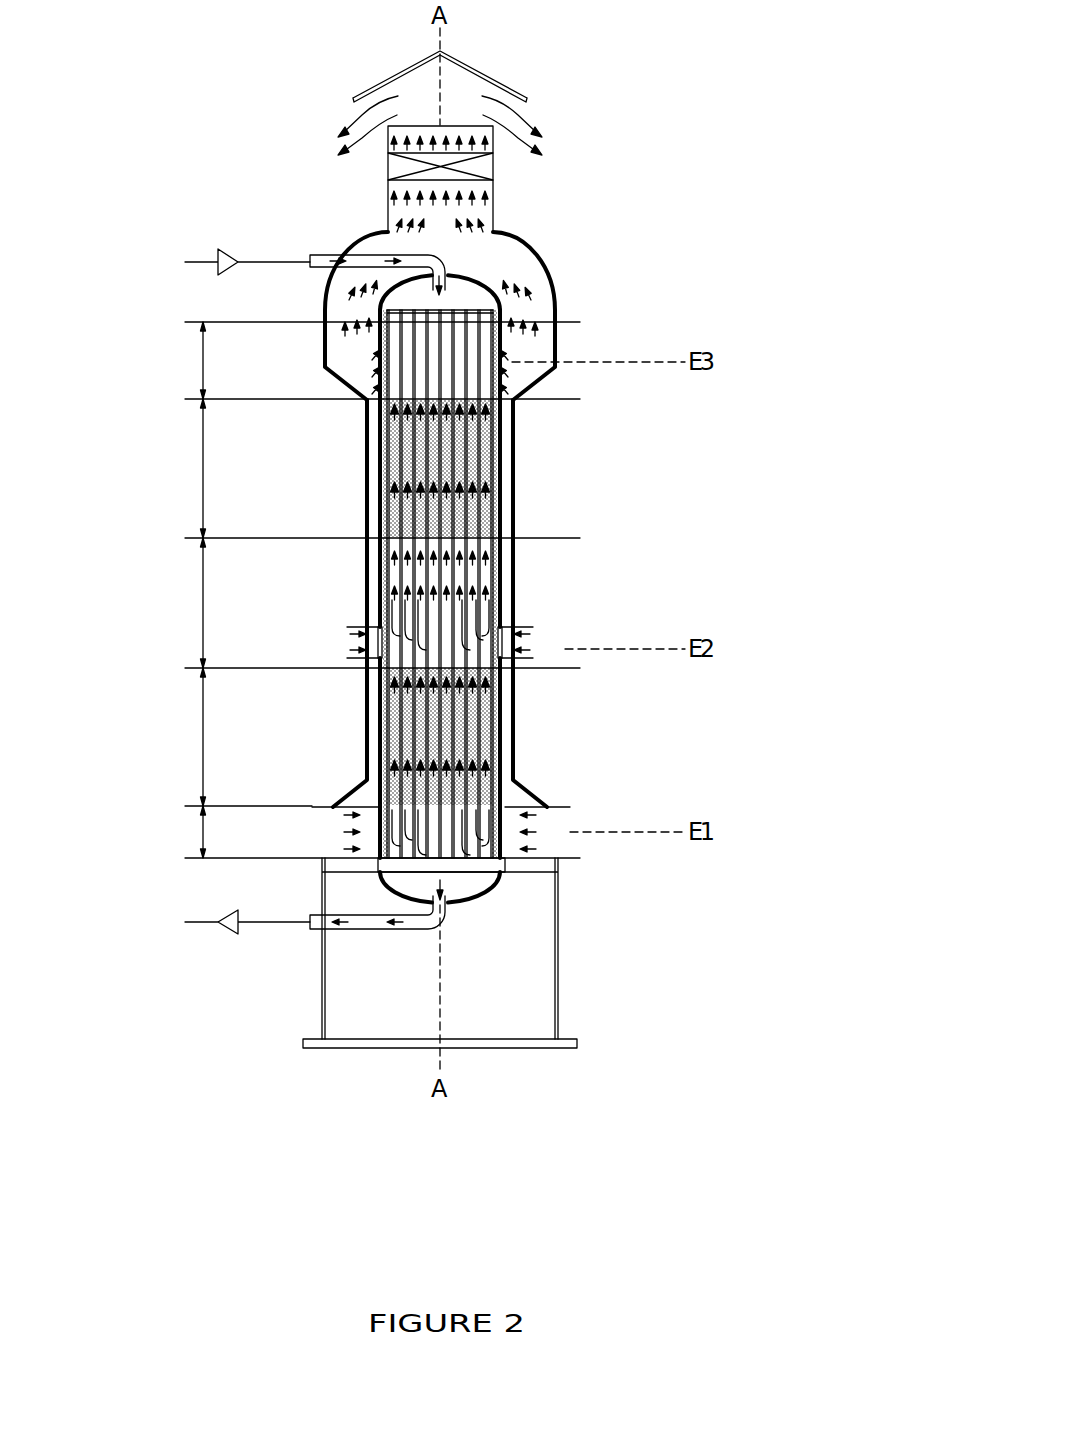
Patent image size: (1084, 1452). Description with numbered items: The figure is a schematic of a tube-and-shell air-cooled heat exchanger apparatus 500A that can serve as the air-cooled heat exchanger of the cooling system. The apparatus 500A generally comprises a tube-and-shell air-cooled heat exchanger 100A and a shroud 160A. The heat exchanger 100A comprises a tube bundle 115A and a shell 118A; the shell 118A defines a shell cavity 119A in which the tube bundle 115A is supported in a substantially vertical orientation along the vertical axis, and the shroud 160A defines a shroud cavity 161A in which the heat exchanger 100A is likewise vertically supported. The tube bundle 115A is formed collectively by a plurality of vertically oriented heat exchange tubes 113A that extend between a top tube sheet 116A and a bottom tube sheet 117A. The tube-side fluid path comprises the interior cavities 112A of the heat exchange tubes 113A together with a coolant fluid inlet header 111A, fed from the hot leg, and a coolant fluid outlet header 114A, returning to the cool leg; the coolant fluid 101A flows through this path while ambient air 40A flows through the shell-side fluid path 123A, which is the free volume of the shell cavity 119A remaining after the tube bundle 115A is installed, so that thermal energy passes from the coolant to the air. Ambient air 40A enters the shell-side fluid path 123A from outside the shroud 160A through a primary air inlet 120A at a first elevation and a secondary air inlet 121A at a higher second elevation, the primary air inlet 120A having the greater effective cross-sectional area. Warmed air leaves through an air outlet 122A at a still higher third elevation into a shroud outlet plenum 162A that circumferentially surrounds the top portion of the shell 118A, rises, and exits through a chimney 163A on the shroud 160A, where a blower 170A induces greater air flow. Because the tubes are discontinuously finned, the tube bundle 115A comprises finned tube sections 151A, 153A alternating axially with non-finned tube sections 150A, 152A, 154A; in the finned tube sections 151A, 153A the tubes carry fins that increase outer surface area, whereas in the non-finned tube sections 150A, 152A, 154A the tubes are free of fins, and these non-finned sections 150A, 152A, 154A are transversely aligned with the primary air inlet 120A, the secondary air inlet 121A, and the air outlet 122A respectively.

The tube-and-shell air-cooled heat exchanger apparatus 500A is at (735, 127).
The ambient air 40A is at (507, 106).
The chimney 163A is at (495, 175).
The blower 170A is at (405, 165).
The coolant fluid 101A is at (342, 257).
The coolant fluid inlet header 111A is at (447, 290).
The shell 118A is at (478, 271).
The top tube sheet 116A is at (485, 317).
The shroud outlet plenum 162A is at (546, 323).
The air outlet 122A is at (509, 349).
The shroud cavity 161A is at (507, 440).
The shroud 160A is at (517, 450).
The interior cavities 112A is at (497, 498).
The tube bundle 115A is at (497, 545).
The shell-side fluid path 123A is at (478, 607).
The shell cavity 119A is at (440, 832).
The secondary air inlet 121A is at (536, 635).
The heat exchange tubes 113A is at (508, 730).
The primary air inlet 120A is at (543, 820).
The bottom tube sheet 117A is at (532, 908).
The coolant fluid outlet header 114A is at (455, 915).
The tube-and-shell air-cooled heat exchanger 100A is at (453, 890).
The non-finned tube section 150A is at (203, 832).
The finned tube section 151A is at (203, 735).
The non-finned tube section 152A is at (203, 603).
The finned tube section 153A is at (203, 467).
The non-finned tube section 154A is at (203, 360).